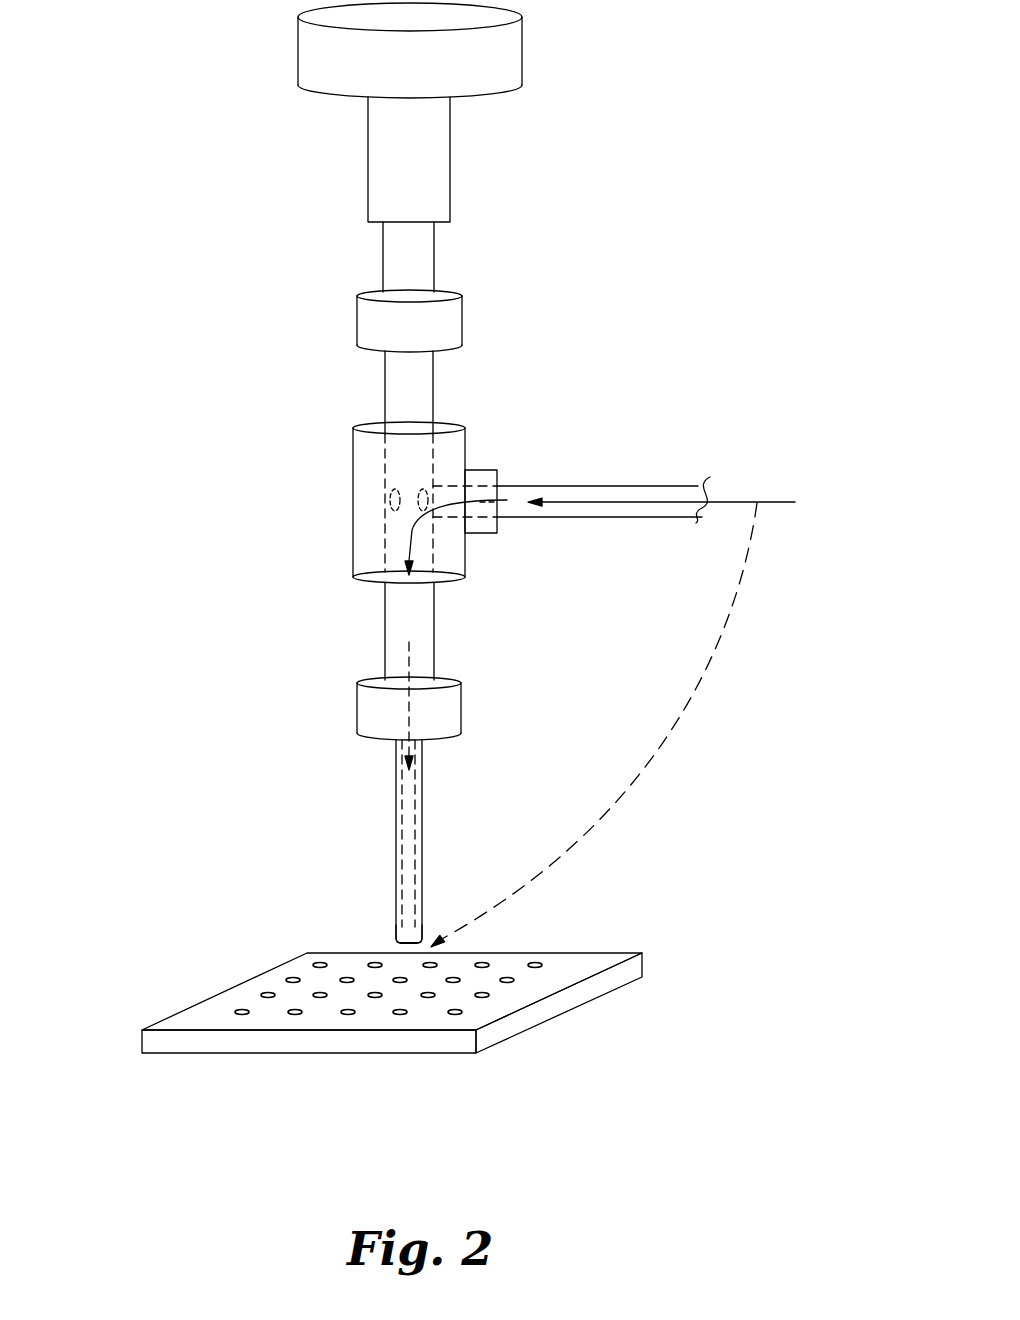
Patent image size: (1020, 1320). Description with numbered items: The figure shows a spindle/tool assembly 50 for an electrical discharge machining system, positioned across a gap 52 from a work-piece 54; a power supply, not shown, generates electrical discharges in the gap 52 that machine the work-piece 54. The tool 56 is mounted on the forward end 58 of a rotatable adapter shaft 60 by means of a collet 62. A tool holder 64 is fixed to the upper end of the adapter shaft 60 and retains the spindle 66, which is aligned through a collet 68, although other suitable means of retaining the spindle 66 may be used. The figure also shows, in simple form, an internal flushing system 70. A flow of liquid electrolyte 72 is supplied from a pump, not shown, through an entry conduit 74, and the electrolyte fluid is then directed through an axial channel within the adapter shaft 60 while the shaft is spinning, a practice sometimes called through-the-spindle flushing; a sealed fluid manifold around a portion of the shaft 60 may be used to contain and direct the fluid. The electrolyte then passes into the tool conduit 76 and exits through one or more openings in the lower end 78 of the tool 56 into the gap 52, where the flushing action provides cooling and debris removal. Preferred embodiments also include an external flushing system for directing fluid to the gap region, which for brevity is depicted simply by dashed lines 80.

The spindle/tool assembly 50 is at (205, 192).
The gap 52 is at (362, 935).
The work-piece 54 is at (189, 1004).
The tool 56 is at (417, 875).
The forward end 58 is at (385, 630).
The adapter shaft 60 is at (386, 388).
The collet 62 is at (357, 703).
The tool holder 64 is at (368, 166).
The spindle 66 is at (383, 258).
The collet 68 is at (359, 320).
The internal flushing system 70 is at (594, 435).
The liquid electrolyte 72 is at (648, 502).
The entry conduit 74 is at (607, 518).
The tool conduit 76 is at (408, 823).
The lower end 78 is at (418, 956).
The dashed lines 80 is at (667, 747).